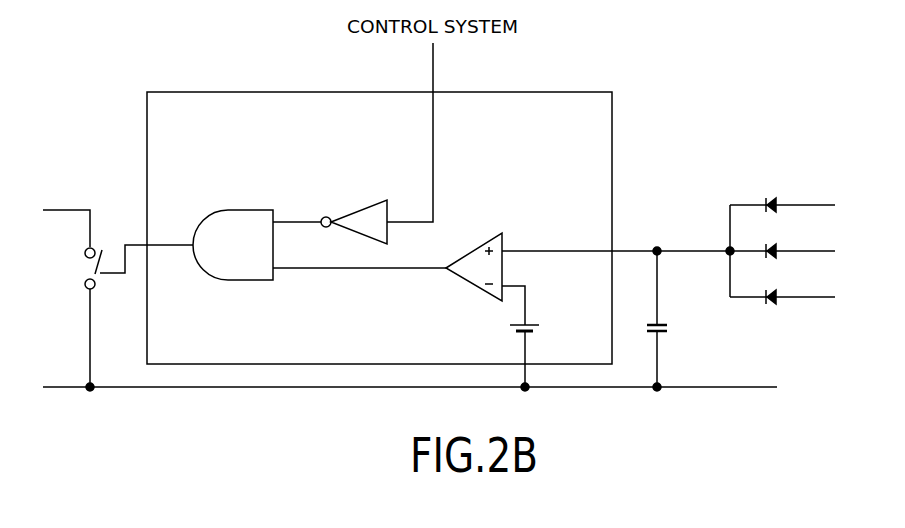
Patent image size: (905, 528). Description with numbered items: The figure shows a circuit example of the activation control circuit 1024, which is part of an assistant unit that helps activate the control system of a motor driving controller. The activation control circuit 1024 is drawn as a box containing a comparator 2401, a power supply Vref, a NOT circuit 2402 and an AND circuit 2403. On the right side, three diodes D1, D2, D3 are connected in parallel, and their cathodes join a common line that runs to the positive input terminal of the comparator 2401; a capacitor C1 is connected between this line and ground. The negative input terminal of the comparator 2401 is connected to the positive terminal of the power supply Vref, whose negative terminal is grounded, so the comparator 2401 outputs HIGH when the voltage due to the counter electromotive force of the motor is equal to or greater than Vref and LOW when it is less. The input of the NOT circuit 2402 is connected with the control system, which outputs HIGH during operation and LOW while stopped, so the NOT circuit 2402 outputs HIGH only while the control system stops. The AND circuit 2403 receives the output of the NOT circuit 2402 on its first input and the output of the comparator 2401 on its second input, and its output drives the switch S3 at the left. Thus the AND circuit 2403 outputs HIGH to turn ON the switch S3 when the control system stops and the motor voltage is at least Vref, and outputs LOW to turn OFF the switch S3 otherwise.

The activation control circuit 1024 is at (612, 133).
The comparator 2401 is at (502, 236).
The NOT circuit 2402 is at (362, 205).
The AND circuit 2403 is at (244, 210).
The switch S3 is at (139, 318).
The capacitor C1 is at (670, 319).
The diode D1 is at (782, 215).
The diode D2 is at (784, 260).
The diode D3 is at (782, 306).
The power supply Vref is at (539, 358).